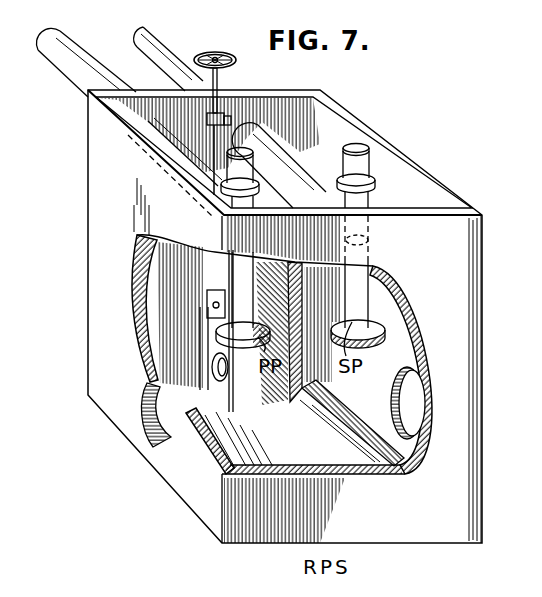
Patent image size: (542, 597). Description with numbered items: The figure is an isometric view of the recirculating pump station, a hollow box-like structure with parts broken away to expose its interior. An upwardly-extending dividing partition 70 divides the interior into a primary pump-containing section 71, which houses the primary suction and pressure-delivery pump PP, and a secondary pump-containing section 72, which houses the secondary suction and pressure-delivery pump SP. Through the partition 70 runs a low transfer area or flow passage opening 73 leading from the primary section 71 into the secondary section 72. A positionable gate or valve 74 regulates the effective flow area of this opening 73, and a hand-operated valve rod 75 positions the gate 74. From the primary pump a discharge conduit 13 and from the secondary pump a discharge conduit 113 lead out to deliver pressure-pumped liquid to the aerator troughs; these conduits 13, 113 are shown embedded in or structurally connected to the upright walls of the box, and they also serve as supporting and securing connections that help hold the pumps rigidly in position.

The discharge conduit 13 is at (72, 87).
The discharge conduit 113 is at (197, 27).
The valve rod 75 is at (226, 80).
The positionable gate or valve 74 is at (212, 337).
The flow passage opening 73 is at (222, 369).
The primary pump-containing section 71 is at (230, 438).
The dividing partition 70 is at (300, 361).
The secondary pump-containing section 72 is at (343, 422).